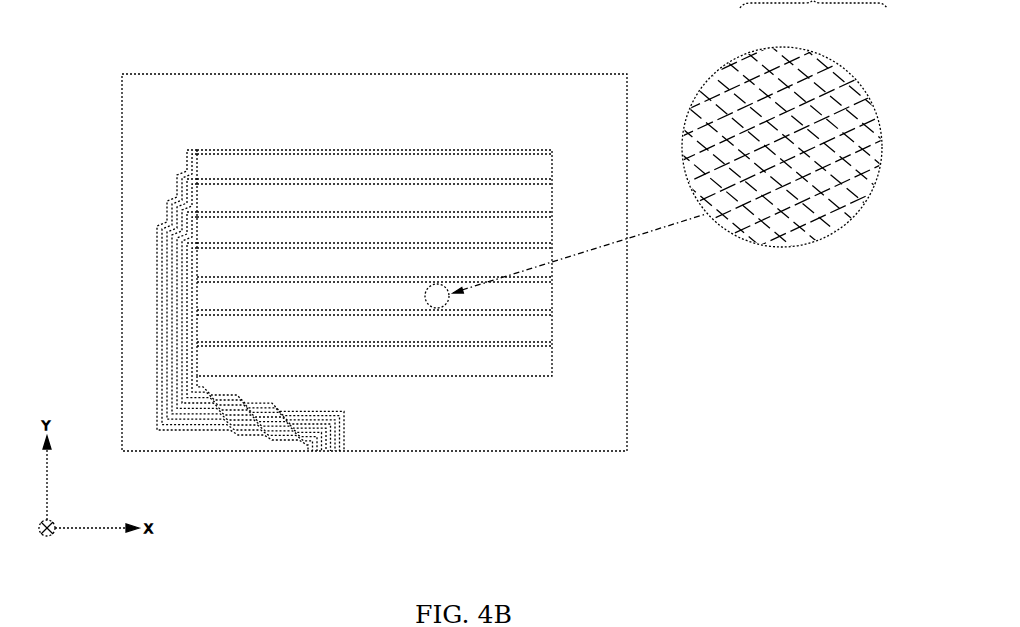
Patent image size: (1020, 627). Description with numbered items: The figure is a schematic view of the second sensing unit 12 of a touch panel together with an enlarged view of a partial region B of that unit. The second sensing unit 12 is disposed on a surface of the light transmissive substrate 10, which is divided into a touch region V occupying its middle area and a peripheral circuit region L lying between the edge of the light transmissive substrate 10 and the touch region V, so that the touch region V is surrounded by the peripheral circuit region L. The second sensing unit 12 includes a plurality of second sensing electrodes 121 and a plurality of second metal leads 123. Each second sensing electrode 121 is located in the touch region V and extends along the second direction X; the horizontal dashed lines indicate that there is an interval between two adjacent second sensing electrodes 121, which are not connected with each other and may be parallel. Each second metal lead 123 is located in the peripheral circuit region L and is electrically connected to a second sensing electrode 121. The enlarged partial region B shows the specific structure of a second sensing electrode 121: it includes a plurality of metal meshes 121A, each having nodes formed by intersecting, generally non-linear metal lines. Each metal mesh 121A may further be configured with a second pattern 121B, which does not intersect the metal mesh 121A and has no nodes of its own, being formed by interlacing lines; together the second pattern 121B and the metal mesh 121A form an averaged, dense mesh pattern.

The light transmissive substrate 10 is at (122, 262).
The second sensing unit 12 is at (555, 492).
The second sensing electrode 121 is at (537, 295).
The metal mesh 121A is at (802, 130).
The second pattern 121B is at (808, 130).
The second metal lead 123 is at (333, 433).
The peripheral circuit region L is at (497, 90).
The touch region V is at (215, 174).
The partial region B is at (428, 296).